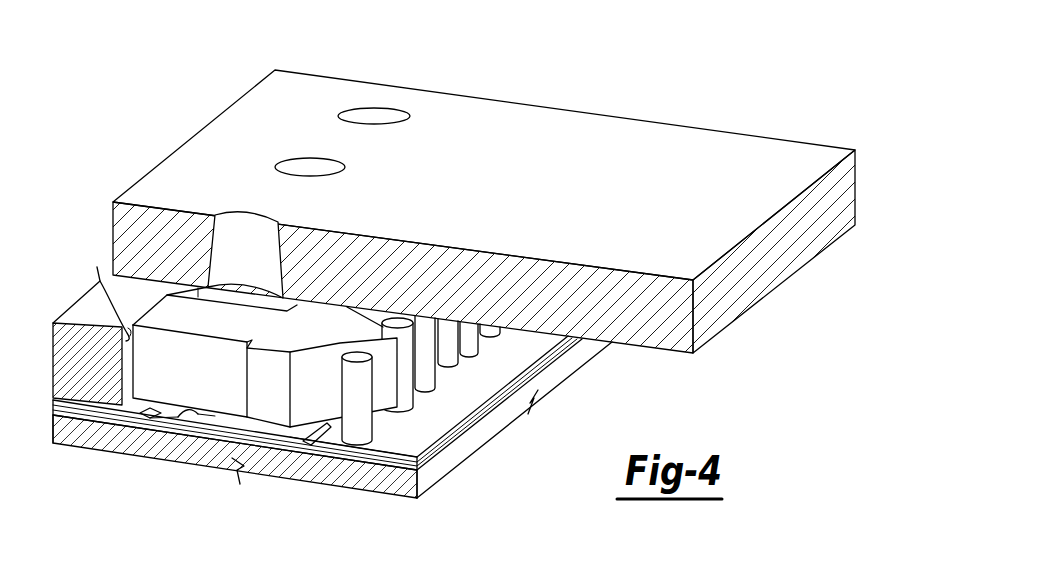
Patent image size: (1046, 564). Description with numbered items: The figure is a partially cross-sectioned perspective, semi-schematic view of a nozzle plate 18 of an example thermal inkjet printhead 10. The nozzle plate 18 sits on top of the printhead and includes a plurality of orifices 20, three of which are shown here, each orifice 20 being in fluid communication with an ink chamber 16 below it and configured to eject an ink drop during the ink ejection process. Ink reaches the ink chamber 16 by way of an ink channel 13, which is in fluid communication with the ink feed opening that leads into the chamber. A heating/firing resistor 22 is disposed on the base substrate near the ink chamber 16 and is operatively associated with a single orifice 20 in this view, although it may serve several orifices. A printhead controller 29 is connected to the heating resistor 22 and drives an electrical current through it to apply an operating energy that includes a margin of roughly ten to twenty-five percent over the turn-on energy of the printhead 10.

The thermal inkjet printhead 10 is at (173, 73).
The ink channel 13 is at (507, 369).
The ink chamber 16 is at (276, 343).
The nozzle plate 18 is at (568, 128).
The orifice 20 is at (292, 162).
The heating/firing resistor 22 is at (178, 410).
The printhead controller 29 is at (202, 432).